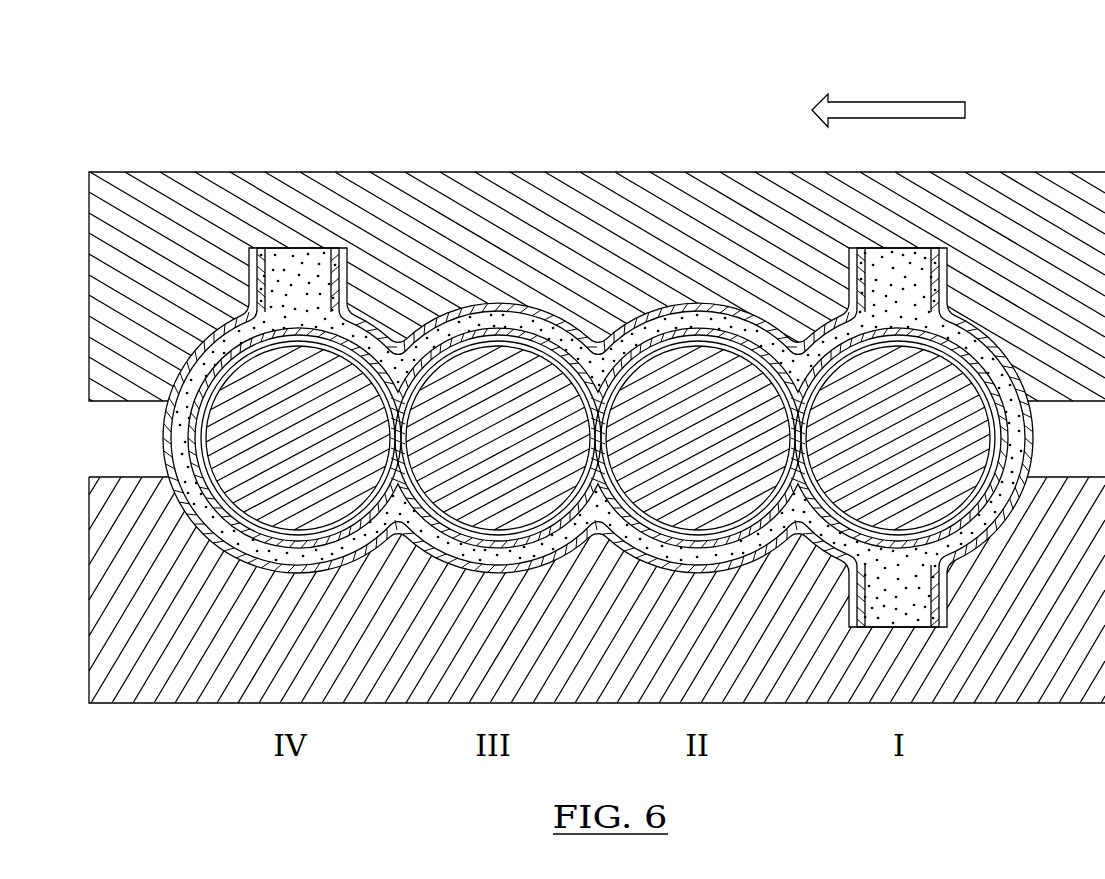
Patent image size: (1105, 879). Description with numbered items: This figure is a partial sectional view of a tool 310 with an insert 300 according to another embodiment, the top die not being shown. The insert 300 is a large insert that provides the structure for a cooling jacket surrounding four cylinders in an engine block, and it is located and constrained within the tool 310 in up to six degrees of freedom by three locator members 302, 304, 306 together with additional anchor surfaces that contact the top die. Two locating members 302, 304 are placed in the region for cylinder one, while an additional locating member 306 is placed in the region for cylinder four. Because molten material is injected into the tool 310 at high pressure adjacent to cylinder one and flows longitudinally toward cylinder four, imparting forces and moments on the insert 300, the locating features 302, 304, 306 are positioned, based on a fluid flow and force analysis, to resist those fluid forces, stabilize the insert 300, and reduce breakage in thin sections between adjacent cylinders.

The tool 310 is at (664, 88).
The insert 300 is at (512, 322).
The locator member 302 is at (915, 605).
The locator member 304 is at (916, 270).
The locator member 306 is at (311, 268).